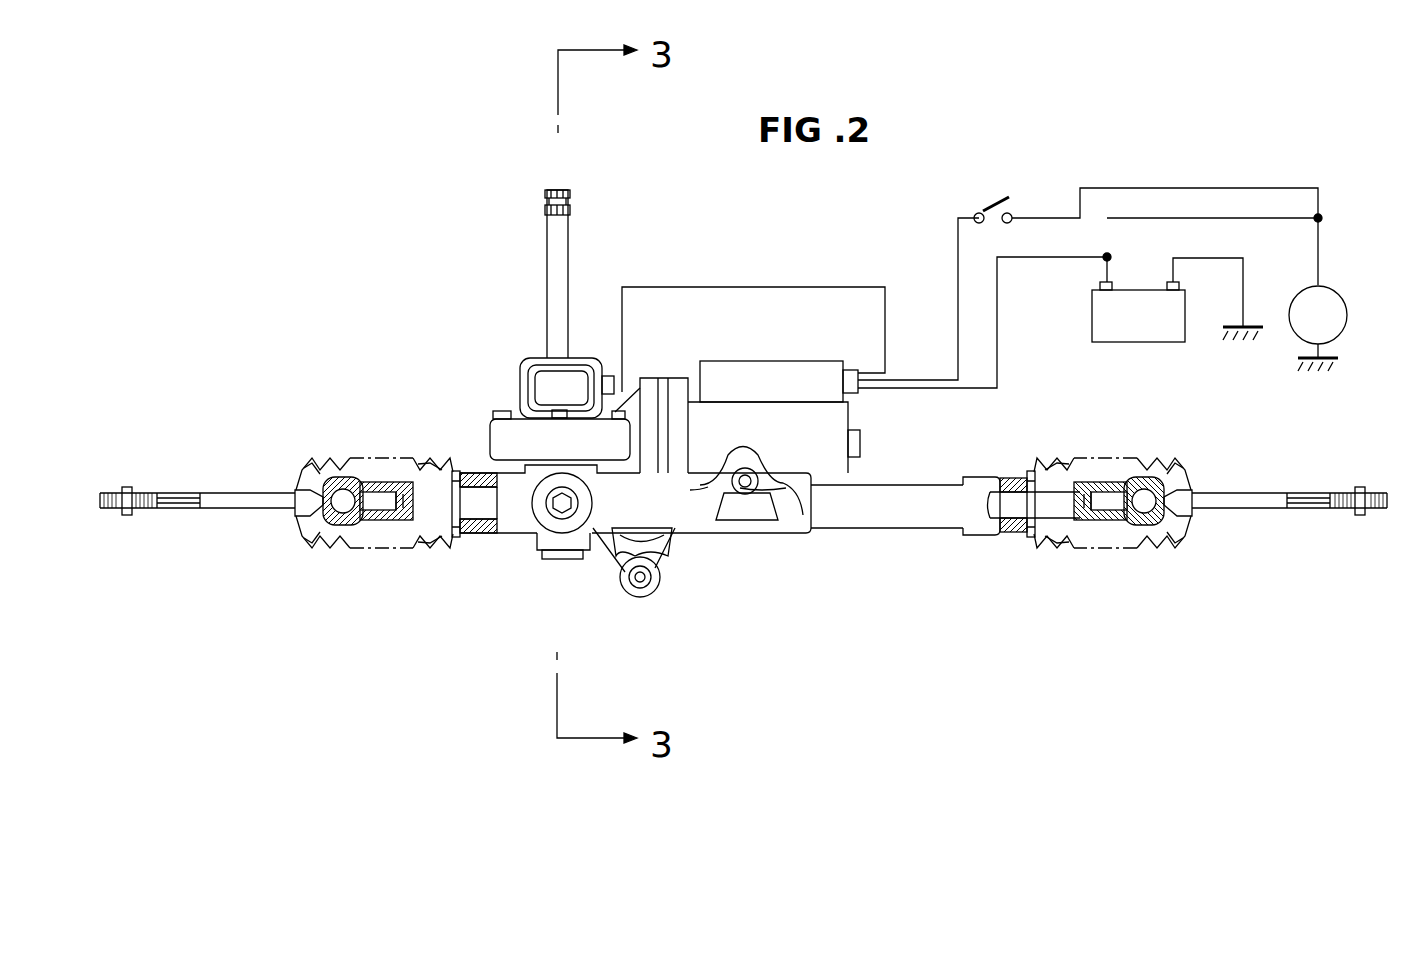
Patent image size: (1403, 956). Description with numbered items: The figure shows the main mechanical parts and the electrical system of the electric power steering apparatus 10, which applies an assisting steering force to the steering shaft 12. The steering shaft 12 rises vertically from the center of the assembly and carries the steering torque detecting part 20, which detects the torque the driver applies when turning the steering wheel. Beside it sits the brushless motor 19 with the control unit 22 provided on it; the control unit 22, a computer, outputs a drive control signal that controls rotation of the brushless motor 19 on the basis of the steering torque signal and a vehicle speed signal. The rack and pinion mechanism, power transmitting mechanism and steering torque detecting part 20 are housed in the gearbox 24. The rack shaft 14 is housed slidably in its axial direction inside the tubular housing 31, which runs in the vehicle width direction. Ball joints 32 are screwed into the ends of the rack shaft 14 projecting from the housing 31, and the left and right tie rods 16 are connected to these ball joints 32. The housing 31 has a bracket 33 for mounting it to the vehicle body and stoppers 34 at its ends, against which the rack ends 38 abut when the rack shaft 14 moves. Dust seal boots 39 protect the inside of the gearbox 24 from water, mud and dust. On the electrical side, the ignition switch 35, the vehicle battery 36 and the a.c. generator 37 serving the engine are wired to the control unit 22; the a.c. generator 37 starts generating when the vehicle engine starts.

The electric power steering apparatus 10 is at (506, 294).
The steering shaft 12 is at (560, 261).
The rack shaft 14 is at (1005, 535).
The tie rod 16 is at (276, 510).
The brushless motor 19 is at (862, 470).
The steering torque detecting part 20 is at (548, 390).
The control unit 22 is at (748, 370).
The gearbox 24 is at (599, 558).
The tubular housing 31 is at (790, 533).
The ball joint 32 is at (348, 506).
The bracket 33 is at (745, 496).
The stopper 34 is at (460, 537).
The ignition switch 35 is at (990, 207).
The vehicle battery 36 is at (1138, 342).
The a.c. generator (ACG) 37 is at (1347, 315).
The rack end 38 is at (362, 520).
The dust seal boot 39 is at (445, 460).